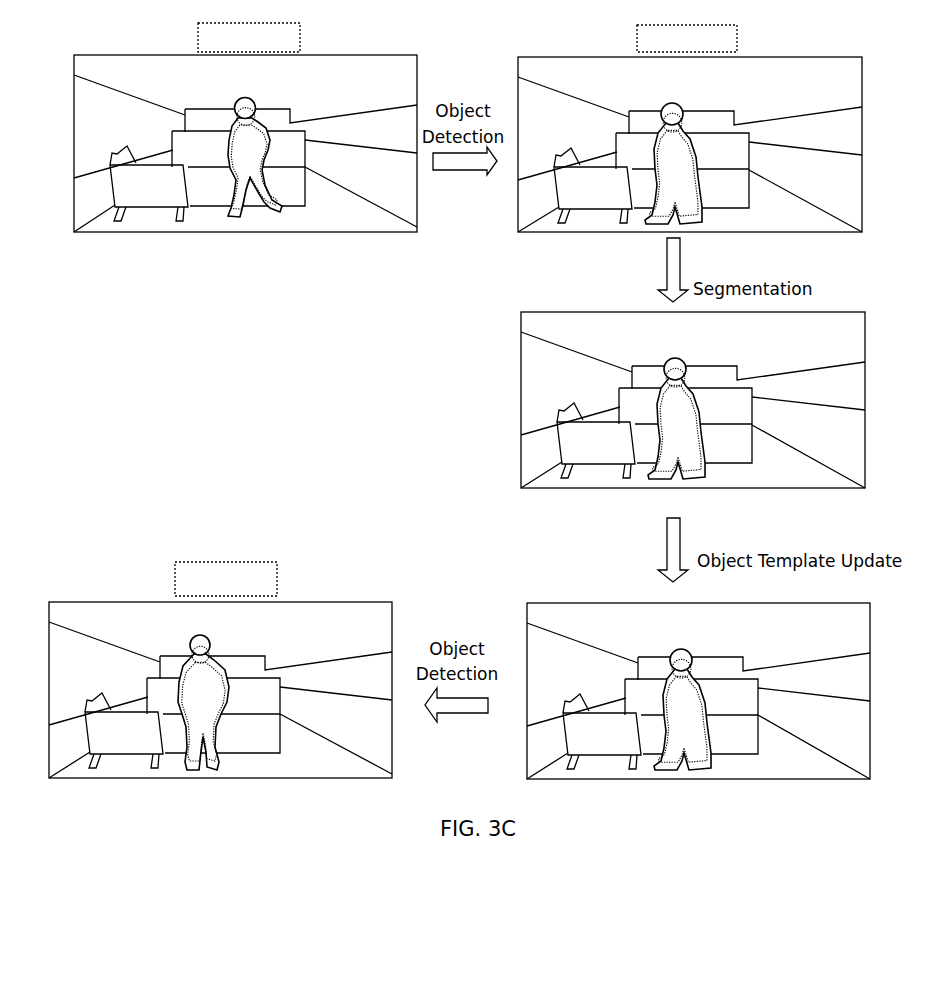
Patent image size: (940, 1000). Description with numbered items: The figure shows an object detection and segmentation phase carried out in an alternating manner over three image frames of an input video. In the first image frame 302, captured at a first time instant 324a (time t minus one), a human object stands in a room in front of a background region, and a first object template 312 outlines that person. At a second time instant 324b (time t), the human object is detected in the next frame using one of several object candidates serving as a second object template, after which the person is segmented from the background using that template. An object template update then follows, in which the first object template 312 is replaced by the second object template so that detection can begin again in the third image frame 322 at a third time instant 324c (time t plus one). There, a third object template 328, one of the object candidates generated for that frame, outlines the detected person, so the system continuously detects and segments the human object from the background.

The first image frame 302 is at (417, 78).
The first object template 312 is at (345, 267).
The third image frame 322 is at (392, 622).
The first time instant 324a is at (300, 33).
The second time instant 324b is at (737, 38).
The third time instant 324c is at (277, 578).
The third object template 328 is at (218, 742).